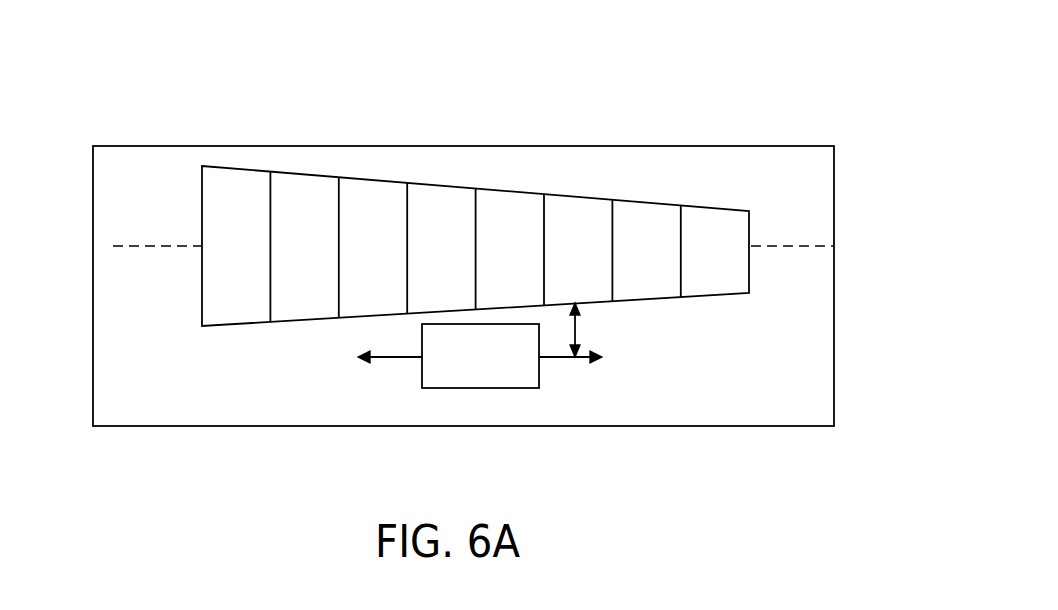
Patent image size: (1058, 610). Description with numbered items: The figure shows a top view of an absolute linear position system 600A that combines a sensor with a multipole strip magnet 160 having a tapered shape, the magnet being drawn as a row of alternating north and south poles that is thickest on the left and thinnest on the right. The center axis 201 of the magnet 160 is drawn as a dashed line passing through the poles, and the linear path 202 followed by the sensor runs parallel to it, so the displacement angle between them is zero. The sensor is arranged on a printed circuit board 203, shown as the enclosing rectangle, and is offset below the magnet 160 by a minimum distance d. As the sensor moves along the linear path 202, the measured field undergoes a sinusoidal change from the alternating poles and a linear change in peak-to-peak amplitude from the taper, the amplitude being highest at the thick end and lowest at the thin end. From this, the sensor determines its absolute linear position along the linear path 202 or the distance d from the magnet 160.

The absolute linear position system 600A is at (138, 49).
The multipole strip magnet 160 is at (240, 167).
The center axis 201 is at (787, 245).
The linear path 202 is at (575, 360).
The printed circuit board 203 is at (834, 361).